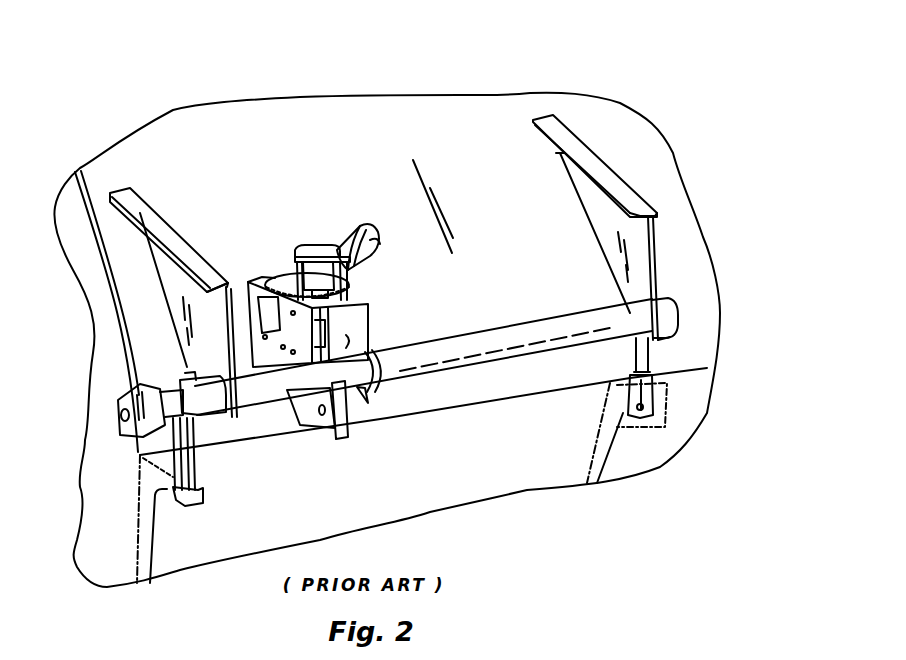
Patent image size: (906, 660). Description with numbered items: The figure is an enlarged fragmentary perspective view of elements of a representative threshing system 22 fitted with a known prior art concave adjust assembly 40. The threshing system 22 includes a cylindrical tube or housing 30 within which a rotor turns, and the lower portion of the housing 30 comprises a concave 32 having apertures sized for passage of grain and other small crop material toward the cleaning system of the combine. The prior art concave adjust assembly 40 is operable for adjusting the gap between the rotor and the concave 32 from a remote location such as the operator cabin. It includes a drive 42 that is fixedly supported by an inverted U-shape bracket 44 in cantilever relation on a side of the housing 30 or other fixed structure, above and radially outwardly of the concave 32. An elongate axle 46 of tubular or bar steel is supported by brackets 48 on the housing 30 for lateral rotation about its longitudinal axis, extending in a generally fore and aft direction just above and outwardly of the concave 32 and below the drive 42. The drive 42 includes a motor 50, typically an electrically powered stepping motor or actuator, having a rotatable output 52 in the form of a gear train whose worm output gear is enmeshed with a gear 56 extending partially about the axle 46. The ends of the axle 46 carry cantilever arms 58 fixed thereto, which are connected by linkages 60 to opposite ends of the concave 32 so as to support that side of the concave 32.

The threshing system 22 is at (610, 70).
The housing 30 is at (653, 168).
The concave 32 is at (680, 450).
The concave adjust assembly 40 is at (315, 245).
The drive 42 is at (360, 230).
The inverted U-shape bracket 44 is at (370, 330).
The axle 46 is at (683, 310).
The brackets 48 is at (160, 210).
The motor 50 is at (377, 242).
The rotatable output 52 is at (262, 278).
The gear 56 is at (345, 440).
The cantilever arms 58 is at (185, 383).
The linkages 60 is at (173, 432).